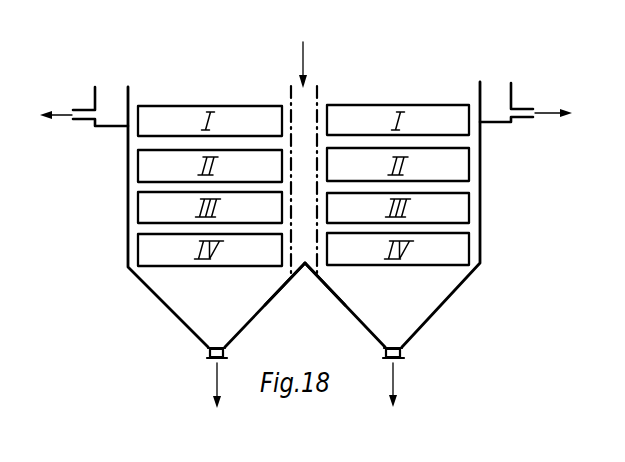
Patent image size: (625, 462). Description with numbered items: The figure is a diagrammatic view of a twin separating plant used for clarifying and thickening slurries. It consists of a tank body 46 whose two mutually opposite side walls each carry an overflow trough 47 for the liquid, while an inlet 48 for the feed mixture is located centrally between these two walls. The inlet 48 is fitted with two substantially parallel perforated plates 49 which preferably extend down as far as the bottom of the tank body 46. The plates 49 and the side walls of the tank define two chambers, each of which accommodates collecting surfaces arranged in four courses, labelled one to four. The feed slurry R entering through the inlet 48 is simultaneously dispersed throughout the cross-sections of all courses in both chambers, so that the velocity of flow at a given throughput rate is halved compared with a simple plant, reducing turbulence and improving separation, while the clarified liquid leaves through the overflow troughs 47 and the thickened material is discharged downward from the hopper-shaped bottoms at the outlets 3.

The outlet / discharge line 3 is at (305, 391).
The tank body 46 is at (203, 303).
The overflow troughs 47 is at (109, 110).
The inlet 48 is at (304, 268).
The perforated plates 49 is at (290, 88).
The feed slurry R is at (303, 54).